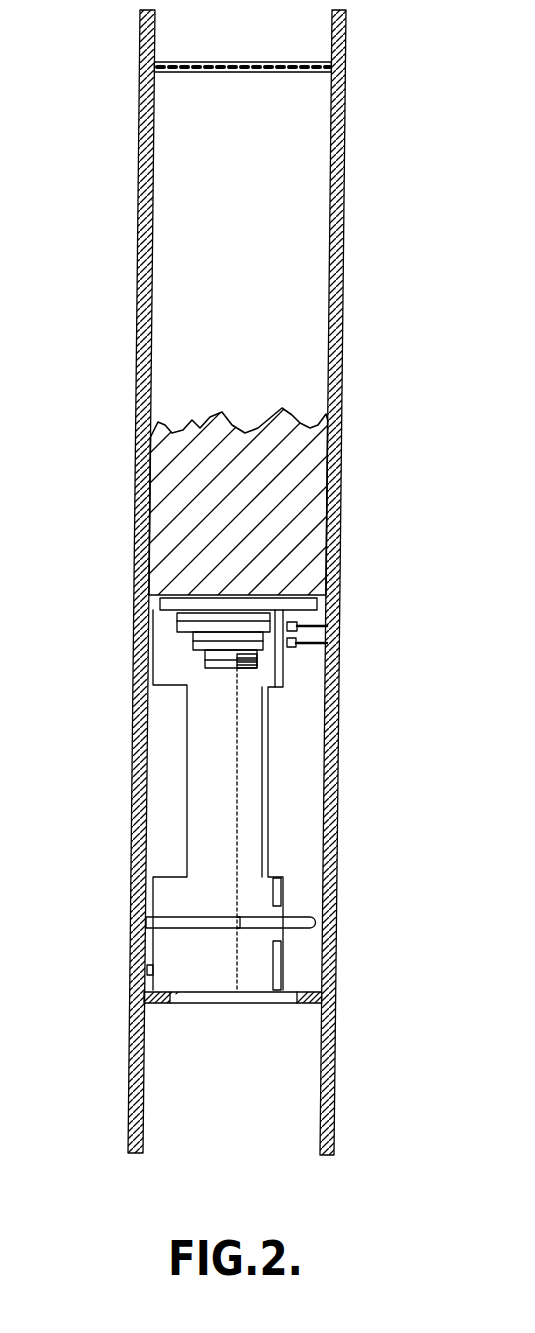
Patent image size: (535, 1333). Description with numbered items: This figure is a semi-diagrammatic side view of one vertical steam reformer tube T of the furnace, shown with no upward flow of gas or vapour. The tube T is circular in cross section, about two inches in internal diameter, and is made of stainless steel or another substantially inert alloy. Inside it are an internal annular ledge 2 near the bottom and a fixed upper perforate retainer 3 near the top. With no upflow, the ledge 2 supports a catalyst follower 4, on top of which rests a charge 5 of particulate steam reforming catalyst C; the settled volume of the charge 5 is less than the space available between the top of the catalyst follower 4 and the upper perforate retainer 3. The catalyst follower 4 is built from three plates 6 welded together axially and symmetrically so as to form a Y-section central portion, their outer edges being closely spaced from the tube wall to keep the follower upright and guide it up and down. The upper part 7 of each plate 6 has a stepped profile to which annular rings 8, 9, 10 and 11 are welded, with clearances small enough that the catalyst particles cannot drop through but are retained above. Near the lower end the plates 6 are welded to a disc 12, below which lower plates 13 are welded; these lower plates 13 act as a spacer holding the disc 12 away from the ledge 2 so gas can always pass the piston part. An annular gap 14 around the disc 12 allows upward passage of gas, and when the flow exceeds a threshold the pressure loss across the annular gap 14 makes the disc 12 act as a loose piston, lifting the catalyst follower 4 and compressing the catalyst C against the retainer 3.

The steam reformer tube T is at (330, 1113).
The particulate steam reforming catalyst C is at (303, 502).
The internal annular ledge 2 is at (310, 1003).
The upper perforate retainer 3 is at (212, 60).
The catalyst follower 4 is at (253, 808).
The charge 5 is at (226, 470).
The plates 6 is at (247, 747).
The upper part 7 is at (175, 660).
The annular ring 8 is at (305, 597).
The annular ring 9 is at (340, 620).
The annular ring 10 is at (342, 650).
The annular ring 11 is at (258, 665).
The disc 12 is at (338, 925).
The lower plates 13 is at (283, 963).
The annular gap 14 is at (128, 930).